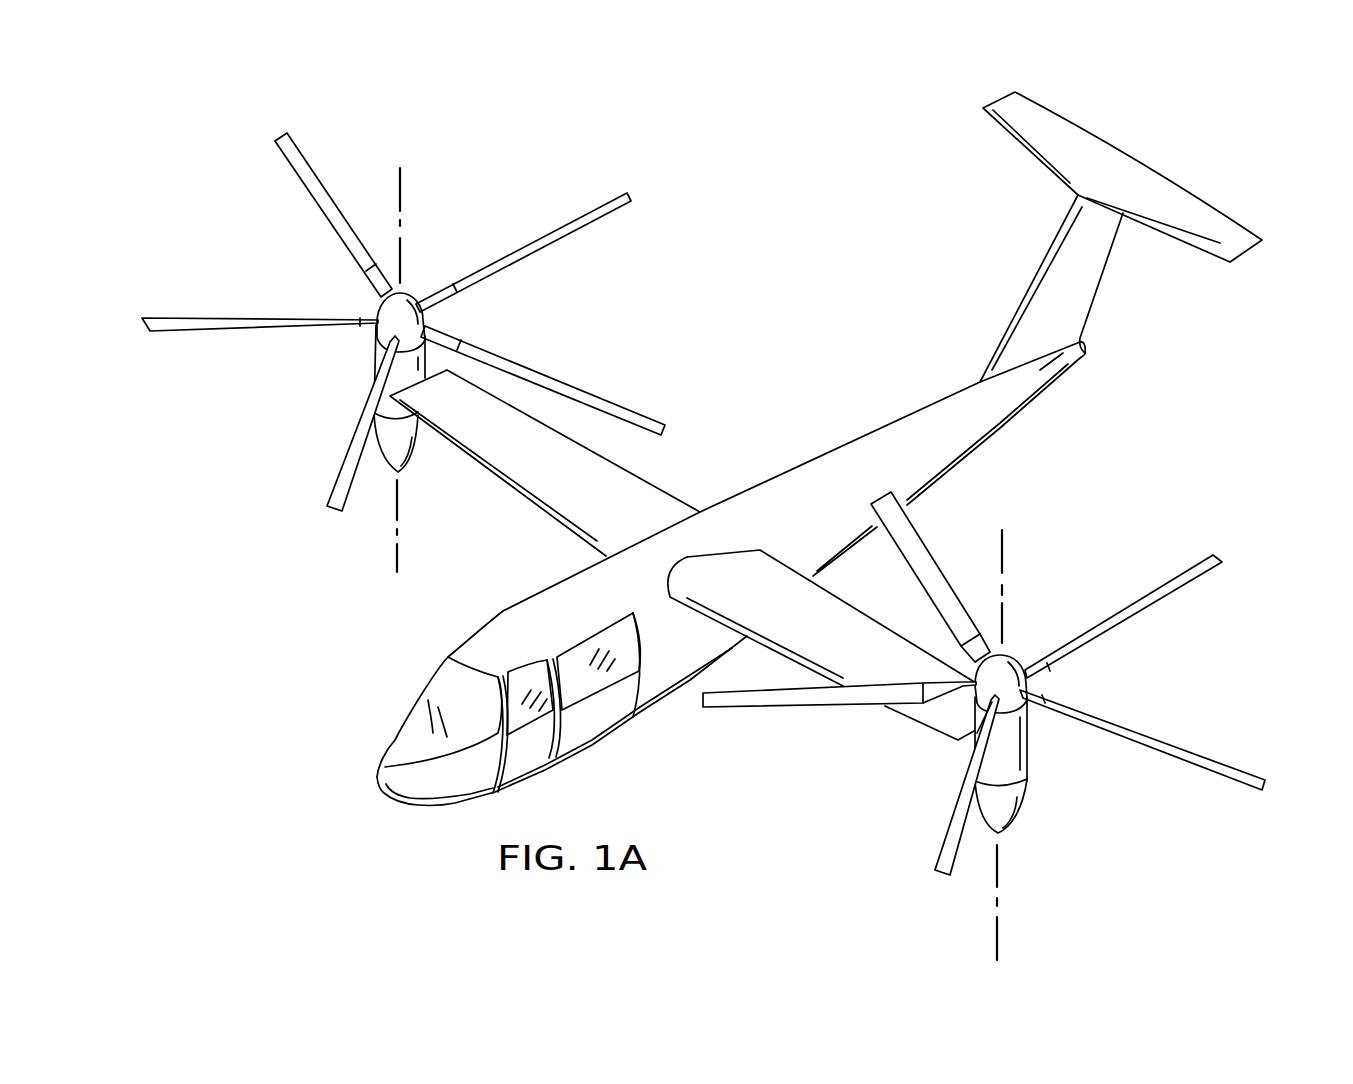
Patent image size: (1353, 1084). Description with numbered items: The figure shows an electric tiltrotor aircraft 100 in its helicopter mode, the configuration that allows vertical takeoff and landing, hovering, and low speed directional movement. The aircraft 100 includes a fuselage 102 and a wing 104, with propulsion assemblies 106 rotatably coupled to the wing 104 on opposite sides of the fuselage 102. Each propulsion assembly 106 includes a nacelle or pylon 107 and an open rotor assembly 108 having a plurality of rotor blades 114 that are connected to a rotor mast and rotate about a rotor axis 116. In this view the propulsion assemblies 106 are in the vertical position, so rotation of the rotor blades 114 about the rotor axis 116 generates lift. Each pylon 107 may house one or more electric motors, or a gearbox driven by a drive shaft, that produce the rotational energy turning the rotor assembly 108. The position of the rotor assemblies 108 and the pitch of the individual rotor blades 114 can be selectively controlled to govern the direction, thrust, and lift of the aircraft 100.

The electric tiltrotor aircraft 100 is at (700, 500).
The fuselage 102 is at (810, 460).
The wing 104 is at (660, 506).
The propulsion assembly 106 is at (703, 546).
The nacelle or pylon 107 is at (417, 450).
The open rotor assembly 108 is at (362, 302).
The rotor blades 114 is at (200, 318).
The rotor axis 116 is at (405, 189).